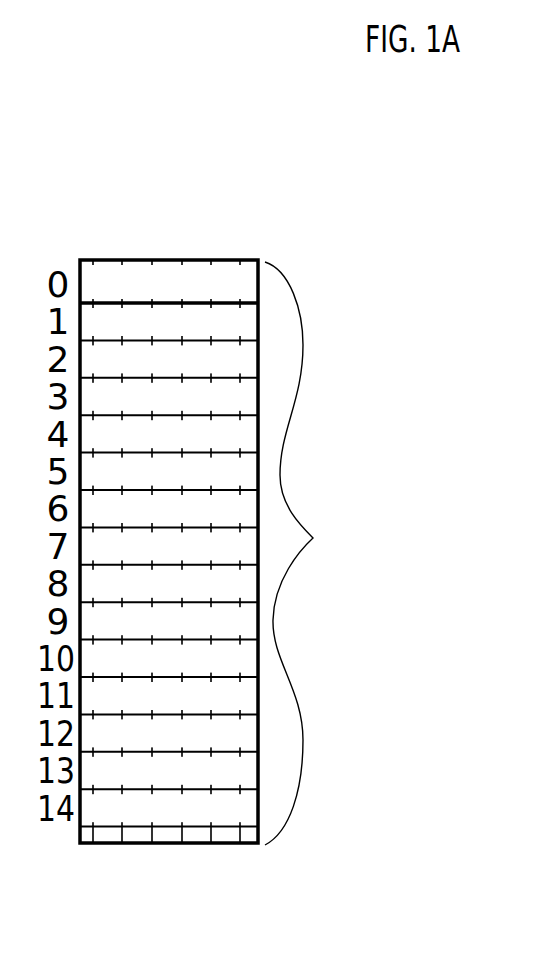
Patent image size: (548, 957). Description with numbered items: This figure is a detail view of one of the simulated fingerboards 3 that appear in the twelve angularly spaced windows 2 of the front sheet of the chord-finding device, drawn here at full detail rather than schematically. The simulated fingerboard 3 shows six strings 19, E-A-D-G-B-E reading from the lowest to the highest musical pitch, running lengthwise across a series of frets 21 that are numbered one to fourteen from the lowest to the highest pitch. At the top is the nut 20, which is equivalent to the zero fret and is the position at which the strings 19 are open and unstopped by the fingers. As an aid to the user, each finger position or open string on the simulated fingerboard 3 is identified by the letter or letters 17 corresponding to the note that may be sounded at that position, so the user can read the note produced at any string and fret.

The letter(s) 17 is at (142, 282).
The strings 19 is at (150, 835).
The nut 20 is at (248, 303).
The frets 21 is at (248, 415).
The simulated fingerboard 3 is at (255, 559).
The window 2 is at (235, 559).